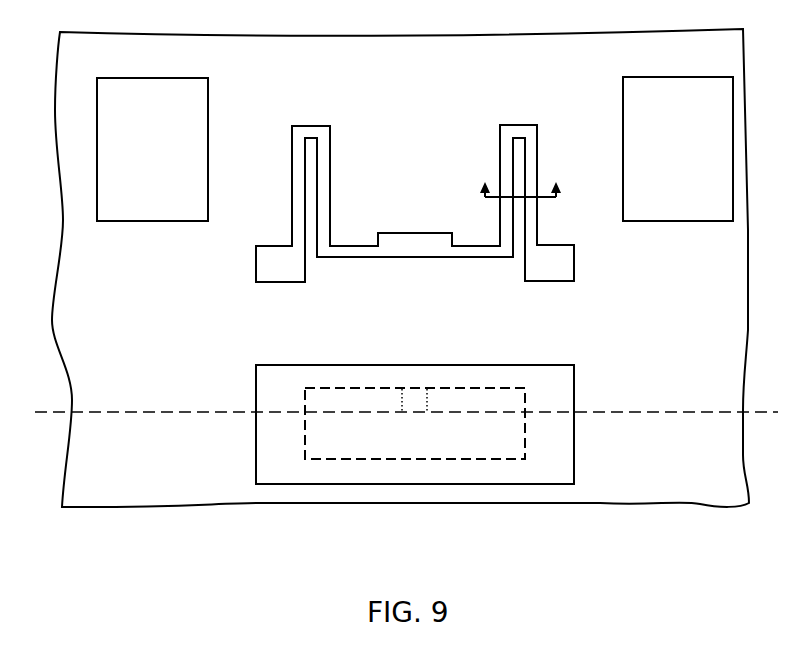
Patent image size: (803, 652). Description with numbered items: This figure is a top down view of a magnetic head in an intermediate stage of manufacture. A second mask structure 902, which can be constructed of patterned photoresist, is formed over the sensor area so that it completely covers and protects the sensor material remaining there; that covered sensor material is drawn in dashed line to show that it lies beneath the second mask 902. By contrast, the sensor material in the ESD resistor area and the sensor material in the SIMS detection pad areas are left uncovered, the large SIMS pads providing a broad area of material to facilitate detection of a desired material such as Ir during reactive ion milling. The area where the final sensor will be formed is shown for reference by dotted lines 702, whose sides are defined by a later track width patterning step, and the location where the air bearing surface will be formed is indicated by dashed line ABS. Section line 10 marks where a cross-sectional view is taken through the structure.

The second mask structure 902 is at (520, 365).
The dotted lines indicating final sensor area 702 is at (427, 398).
The air bearing surface ABS is at (608, 411).
The section line 10- 10 is at (522, 189).